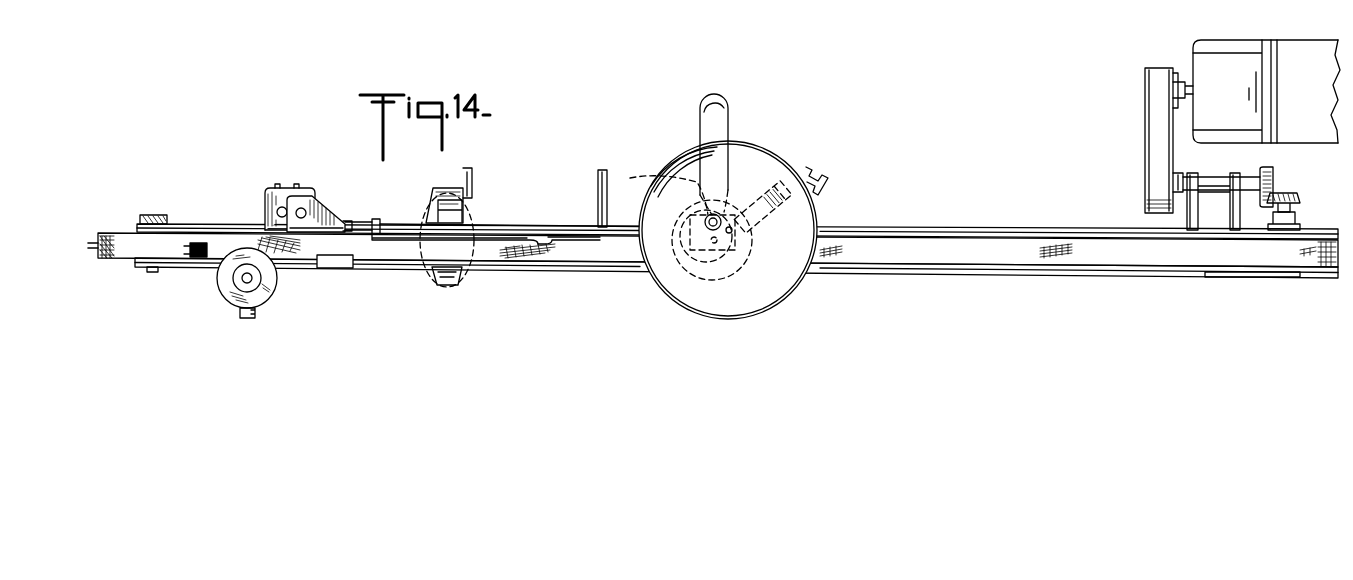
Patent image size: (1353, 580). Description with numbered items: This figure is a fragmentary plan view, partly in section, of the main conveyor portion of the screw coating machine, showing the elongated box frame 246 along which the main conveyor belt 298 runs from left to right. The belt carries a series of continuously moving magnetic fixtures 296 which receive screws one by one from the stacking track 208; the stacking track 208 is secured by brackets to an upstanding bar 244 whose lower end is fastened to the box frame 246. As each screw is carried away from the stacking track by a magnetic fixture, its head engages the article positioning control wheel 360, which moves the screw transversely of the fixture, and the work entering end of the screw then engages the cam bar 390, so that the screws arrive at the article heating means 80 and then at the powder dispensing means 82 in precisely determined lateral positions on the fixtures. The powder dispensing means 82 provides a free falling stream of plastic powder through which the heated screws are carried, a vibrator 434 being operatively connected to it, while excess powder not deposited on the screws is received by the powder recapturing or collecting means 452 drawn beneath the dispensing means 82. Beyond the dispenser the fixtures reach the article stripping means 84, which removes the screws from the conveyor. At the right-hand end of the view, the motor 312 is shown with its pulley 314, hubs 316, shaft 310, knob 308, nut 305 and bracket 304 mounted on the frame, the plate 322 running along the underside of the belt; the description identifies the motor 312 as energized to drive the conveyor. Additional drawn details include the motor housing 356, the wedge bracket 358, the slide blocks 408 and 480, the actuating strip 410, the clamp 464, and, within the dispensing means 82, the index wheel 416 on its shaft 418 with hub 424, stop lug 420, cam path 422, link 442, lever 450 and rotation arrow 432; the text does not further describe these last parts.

The article heating means 80 is at (506, 214).
The powder dispensing means 82 is at (680, 143).
The article stripping means 84 is at (388, 215).
The stacking track 208 is at (215, 244).
The upstanding bar 244 is at (155, 215).
The elongated box frame 246 is at (888, 232).
The magnetic fixtures 296 is at (96, 229).
The main conveyor belt 298 is at (131, 246).
The bracket 304 is at (1288, 220).
The knurled nut 305 is at (1293, 197).
The knob 308 is at (1273, 177).
The drive shaft 310 is at (1208, 181).
The motor 312 is at (1297, 53).
The pulley 314 is at (1153, 130).
The shaft hub 316 is at (1147, 97).
The bottom plate 322 is at (963, 233).
The motor housing 356 is at (270, 304).
The wedge bracket 358 is at (332, 197).
The article positioning control wheel 360 is at (236, 306).
The cam bar 390 is at (300, 190).
The slide block 408 is at (337, 262).
The actuating strip 410 is at (550, 237).
The index wheel 416 is at (665, 165).
The wheel shaft 418 is at (710, 221).
The stop lug 420 is at (813, 172).
The cam path 422 is at (700, 200).
The hub 424 is at (717, 250).
The direction of rotation 432 is at (790, 225).
The vibrator 434 is at (743, 197).
The link 442 is at (740, 198).
The lever 450 is at (660, 184).
The powder recapturing or collecting means 452 is at (703, 112).
The clamp 464 is at (433, 282).
The slide block 480 is at (413, 218).